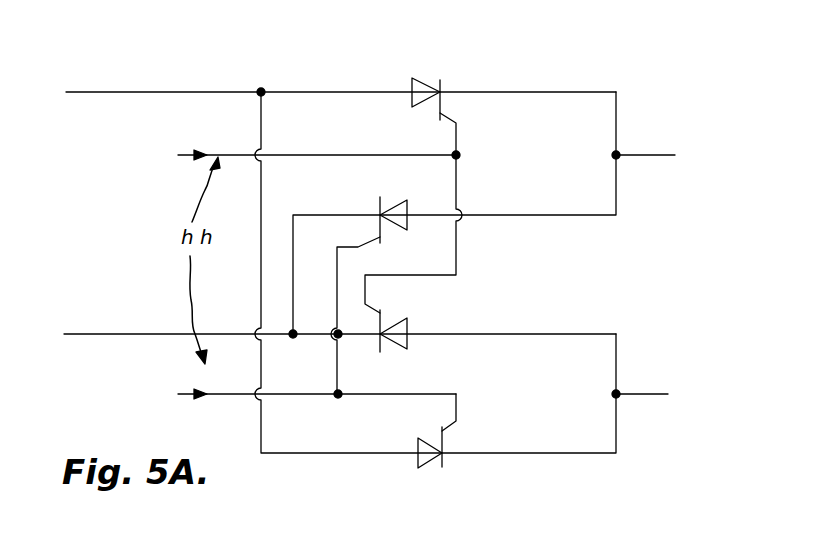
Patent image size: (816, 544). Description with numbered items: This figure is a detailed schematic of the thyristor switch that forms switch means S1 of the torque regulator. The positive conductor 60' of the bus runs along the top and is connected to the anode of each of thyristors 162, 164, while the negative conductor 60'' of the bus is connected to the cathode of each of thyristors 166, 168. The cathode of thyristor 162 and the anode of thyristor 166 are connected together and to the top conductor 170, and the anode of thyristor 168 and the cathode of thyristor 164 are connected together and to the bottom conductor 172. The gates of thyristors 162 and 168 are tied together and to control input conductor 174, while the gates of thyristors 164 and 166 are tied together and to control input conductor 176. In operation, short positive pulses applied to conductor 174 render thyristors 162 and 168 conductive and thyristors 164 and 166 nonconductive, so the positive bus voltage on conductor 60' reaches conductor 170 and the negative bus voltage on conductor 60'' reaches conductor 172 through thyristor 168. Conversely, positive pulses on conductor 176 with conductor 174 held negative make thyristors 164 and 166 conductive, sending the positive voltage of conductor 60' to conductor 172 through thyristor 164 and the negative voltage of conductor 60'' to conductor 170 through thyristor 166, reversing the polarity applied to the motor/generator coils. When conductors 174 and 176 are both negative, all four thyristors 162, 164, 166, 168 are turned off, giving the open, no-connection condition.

The positive conductor 60' is at (341, 78).
The negative conductor 60'' is at (340, 350).
The thyristor 162 is at (420, 78).
The thyristor 164 is at (424, 466).
The thyristor 166 is at (386, 197).
The thyristor 168 is at (398, 322).
The top conductor 170 is at (632, 155).
The bottom conductor 172 is at (636, 396).
The control input conductor 174 is at (226, 155).
The control input conductor 176 is at (222, 394).